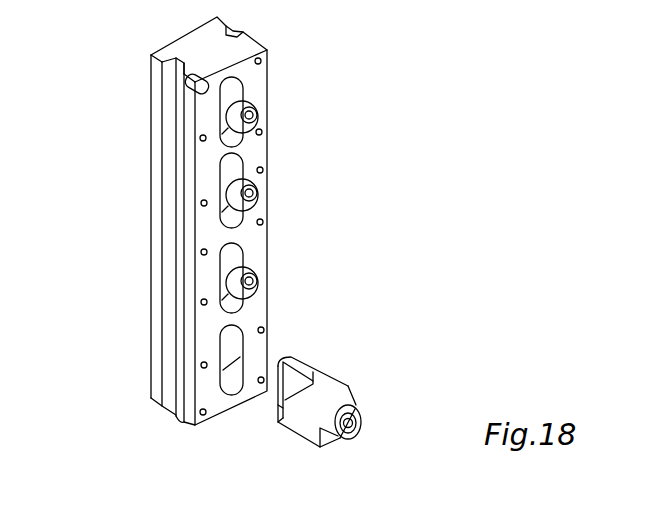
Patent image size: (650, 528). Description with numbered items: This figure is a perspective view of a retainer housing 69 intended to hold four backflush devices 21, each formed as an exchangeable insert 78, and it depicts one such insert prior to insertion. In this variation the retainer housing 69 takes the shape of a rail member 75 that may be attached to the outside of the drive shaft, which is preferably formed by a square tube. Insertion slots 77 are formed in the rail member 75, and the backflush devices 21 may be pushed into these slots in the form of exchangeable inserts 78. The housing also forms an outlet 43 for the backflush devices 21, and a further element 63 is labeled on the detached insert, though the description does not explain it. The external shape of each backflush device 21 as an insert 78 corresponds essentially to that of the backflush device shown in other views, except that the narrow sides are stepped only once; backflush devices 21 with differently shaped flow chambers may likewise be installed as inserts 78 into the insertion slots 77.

The retainer housing 69 is at (214, 221).
The rail member 75 is at (207, 320).
The outlet 43 is at (259, 130).
The insertion slot 77 is at (232, 360).
The backflush device 21 is at (348, 430).
The ferrule 63 is at (360, 437).
The insert 78 is at (280, 413).